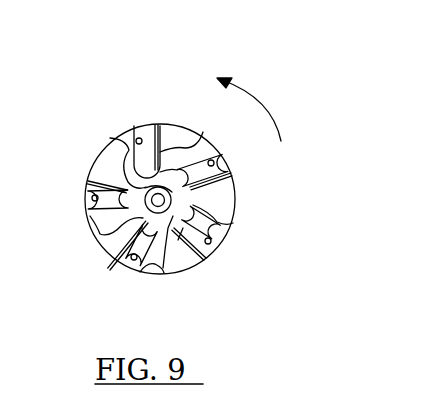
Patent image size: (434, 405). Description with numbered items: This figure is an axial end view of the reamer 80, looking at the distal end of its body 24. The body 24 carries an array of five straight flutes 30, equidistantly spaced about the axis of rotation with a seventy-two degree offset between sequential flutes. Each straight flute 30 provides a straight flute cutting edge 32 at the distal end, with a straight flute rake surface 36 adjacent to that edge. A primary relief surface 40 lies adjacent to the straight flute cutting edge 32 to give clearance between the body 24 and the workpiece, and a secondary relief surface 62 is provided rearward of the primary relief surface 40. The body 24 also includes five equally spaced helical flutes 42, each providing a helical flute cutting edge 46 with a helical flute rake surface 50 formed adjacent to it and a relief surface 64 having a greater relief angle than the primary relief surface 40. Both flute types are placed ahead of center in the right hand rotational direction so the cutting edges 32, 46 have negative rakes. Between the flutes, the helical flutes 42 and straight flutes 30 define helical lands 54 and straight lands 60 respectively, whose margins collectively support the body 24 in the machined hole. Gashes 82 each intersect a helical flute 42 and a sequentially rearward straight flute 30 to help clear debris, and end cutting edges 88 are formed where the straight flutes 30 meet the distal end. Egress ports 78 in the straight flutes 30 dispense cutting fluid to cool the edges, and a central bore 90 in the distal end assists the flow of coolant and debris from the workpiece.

The body 24 is at (182, 122).
The reamer 80 is at (199, 41).
The gashes 82 is at (213, 219).
The straight lands 60 is at (163, 123).
The end cutting edges 88 is at (146, 126).
The helical flute cutting edge 46 is at (135, 143).
The straight flutes 30 is at (141, 161).
The helical lands 54 is at (95, 158).
The straight flute rake surface 36 is at (232, 172).
The helical flute rake surface 50 is at (226, 240).
The egress ports 78 is at (221, 252).
The central bore 90 is at (183, 240).
The primary relief surface 40 is at (108, 256).
The secondary relief surface 62 is at (108, 242).
The helical flutes 42 is at (87, 226).
The relief surface 64 is at (88, 204).
The straight flute cutting edge 32 is at (88, 183).